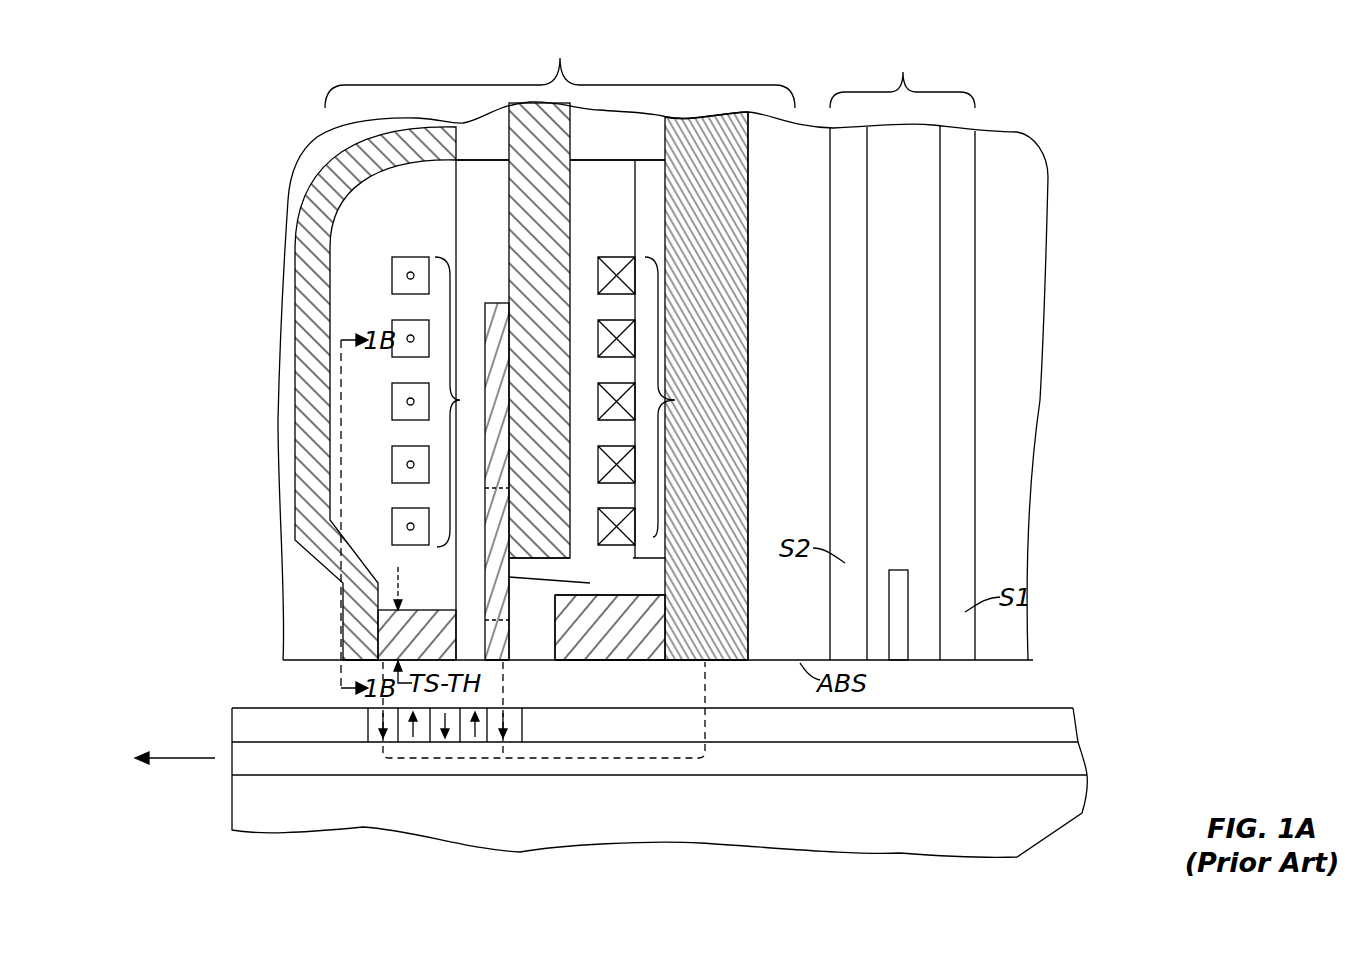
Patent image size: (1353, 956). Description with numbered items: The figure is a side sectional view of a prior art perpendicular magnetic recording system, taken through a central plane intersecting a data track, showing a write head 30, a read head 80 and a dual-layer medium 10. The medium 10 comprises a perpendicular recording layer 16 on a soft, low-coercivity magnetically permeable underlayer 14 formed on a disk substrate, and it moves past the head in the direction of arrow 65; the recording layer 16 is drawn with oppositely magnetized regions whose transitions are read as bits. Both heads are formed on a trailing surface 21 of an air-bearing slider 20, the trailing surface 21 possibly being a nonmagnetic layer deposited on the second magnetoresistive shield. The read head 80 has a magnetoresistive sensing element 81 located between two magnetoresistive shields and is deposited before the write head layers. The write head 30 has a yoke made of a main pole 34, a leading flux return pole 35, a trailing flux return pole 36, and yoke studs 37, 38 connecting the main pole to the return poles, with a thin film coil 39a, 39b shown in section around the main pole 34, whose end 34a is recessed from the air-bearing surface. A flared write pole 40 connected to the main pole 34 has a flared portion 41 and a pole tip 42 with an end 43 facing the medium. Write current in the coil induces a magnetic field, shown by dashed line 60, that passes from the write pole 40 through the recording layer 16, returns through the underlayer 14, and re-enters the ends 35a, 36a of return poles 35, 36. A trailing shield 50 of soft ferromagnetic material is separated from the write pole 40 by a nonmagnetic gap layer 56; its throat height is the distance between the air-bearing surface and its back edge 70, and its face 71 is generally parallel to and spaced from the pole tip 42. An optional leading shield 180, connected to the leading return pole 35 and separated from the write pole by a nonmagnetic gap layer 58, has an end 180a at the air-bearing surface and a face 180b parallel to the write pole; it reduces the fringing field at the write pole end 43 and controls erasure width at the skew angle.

The dual-layer medium 10 is at (1064, 836).
The soft underlayer (SUL) 14 is at (1072, 760).
The recording layer (RL) 16 is at (1065, 725).
The air-bearing slider 20 is at (1032, 396).
The trailing surface 21 is at (748, 228).
The write head 30 is at (560, 66).
The main pole 34 is at (563, 220).
The end of main pole 34a is at (560, 562).
The first or leading flux return pole 35 is at (735, 447).
The end of leading flux return pole 35a is at (720, 663).
The second or trailing flux return pole 36 is at (298, 246).
The end of trailing flux return pole 36a is at (350, 662).
The yoke stud 37 is at (607, 117).
The yoke stud 38 is at (490, 130).
The thin film coil (first portion) 39a is at (662, 401).
The thin film coil (second portion) 39b is at (454, 402).
The flared write pole (WP) 40 is at (508, 300).
The flared portion of write pole 41 is at (566, 584).
The pole tip of write pole 42 is at (509, 646).
The end of write pole tip 43 is at (497, 658).
The trailing shield (TS) 50 is at (387, 652).
The nonmagnetic gap layer 56 is at (470, 645).
The nonmagnetic gap layer 58 is at (544, 652).
The magnetic field 60 is at (450, 760).
The arrow indicating medium motion direction 65 is at (175, 760).
The back edge of trailing shield 70 is at (388, 610).
The face of trailing shield 71 is at (458, 627).
The magnetoresistive (MR) read head 80 is at (902, 348).
The MR sensing element 81 is at (900, 655).
The leading shield (LS) 180 is at (640, 620).
The end of leading shield 180a is at (622, 662).
The face of leading shield 180b is at (556, 618).